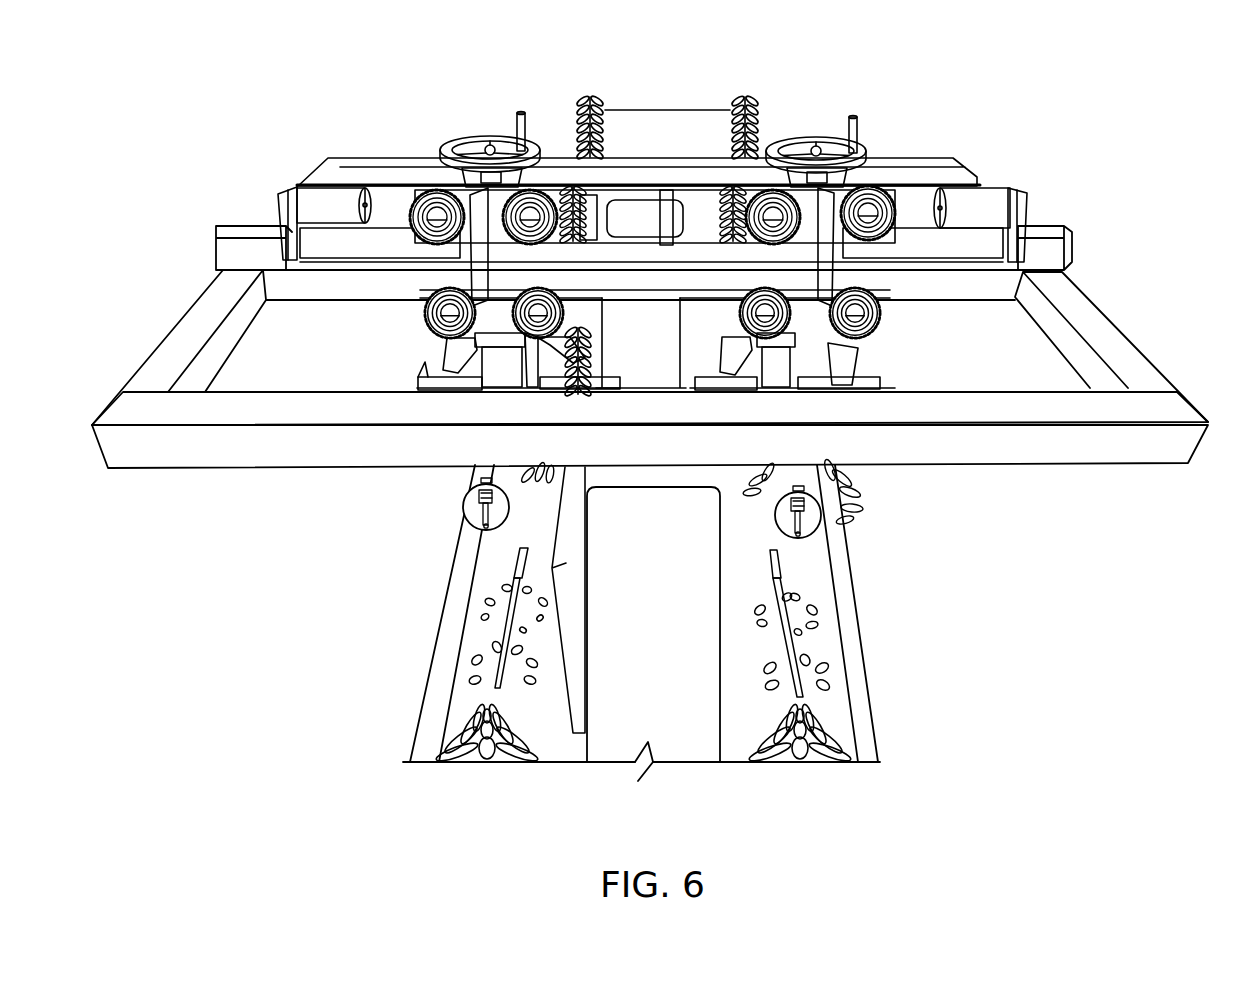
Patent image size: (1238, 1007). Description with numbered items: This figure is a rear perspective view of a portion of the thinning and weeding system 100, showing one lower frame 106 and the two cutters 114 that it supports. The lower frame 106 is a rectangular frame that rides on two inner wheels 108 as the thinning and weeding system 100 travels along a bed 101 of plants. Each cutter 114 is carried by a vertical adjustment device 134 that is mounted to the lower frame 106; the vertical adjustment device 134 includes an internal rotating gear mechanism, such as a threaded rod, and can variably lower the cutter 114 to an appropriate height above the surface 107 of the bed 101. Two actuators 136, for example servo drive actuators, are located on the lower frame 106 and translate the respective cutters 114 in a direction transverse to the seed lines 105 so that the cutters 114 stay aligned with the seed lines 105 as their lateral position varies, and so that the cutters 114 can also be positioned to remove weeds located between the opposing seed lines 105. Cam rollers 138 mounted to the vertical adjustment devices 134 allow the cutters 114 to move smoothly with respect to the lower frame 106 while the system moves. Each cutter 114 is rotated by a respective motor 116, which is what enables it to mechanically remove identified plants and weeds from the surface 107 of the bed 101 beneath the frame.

The thinning and weeding system 100 is at (268, 70).
The bed 101 is at (428, 636).
The seed line 105 is at (517, 575).
The lower frame 106 is at (1183, 410).
The surface 107 is at (743, 607).
The inner wheel 108 is at (697, 732).
The cutter 114 is at (868, 366).
The motor 116 is at (820, 517).
The vertical adjustment device 134 is at (838, 137).
The actuator 136 is at (993, 190).
The cam roller 138 is at (893, 221).